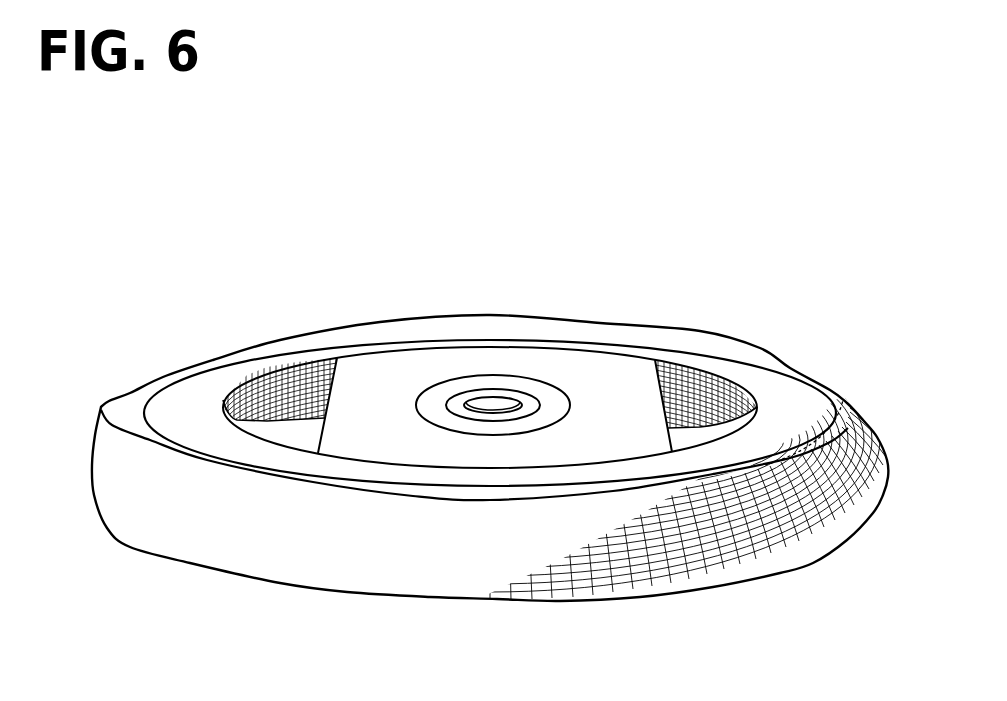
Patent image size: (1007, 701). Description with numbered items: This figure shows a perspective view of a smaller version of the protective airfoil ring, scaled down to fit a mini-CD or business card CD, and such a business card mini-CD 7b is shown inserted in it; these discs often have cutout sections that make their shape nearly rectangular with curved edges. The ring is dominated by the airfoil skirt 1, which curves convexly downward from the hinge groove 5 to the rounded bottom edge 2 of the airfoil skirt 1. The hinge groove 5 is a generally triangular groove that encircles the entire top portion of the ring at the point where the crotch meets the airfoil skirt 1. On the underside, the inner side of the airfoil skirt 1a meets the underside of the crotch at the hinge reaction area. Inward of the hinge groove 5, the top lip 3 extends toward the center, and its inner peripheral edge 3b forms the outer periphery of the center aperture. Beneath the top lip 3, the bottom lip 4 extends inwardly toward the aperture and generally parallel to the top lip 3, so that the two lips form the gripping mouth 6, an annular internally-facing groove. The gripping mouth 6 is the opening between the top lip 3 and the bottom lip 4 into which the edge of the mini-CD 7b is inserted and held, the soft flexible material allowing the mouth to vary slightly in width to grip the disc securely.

The airfoil skirt 1 is at (428, 557).
The inner side of the airfoil skirt 1a is at (268, 390).
The bottom edge of the airfoil skirt 2 is at (555, 600).
The top lip 3 is at (322, 338).
The inner peripheral edge of the top lip 3b is at (327, 355).
The bottom lip 4 is at (660, 365).
The hinge groove 5 is at (189, 443).
The gripping mouth 6 is at (753, 392).
The business card mini-CD 7b is at (605, 435).